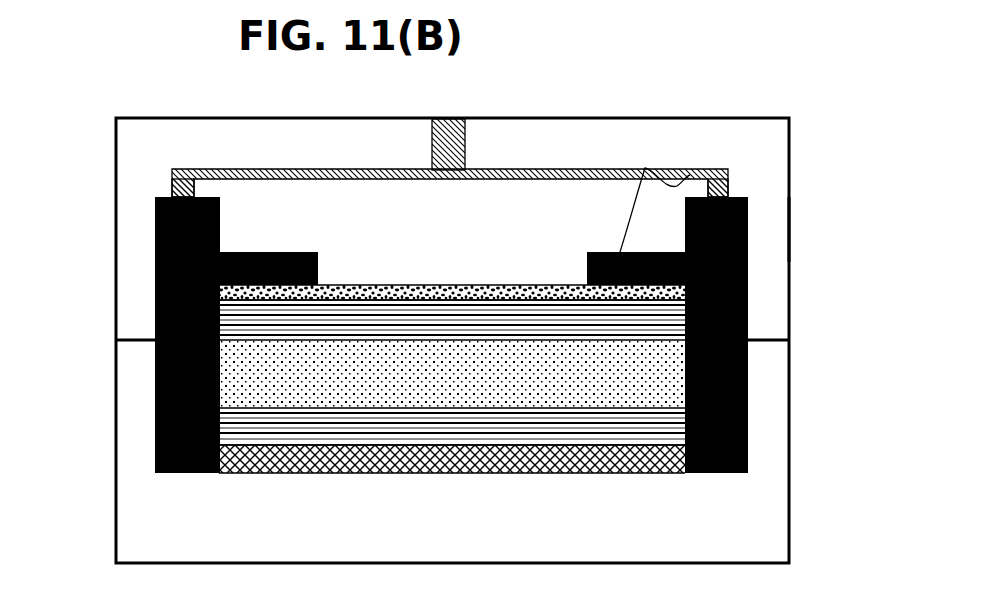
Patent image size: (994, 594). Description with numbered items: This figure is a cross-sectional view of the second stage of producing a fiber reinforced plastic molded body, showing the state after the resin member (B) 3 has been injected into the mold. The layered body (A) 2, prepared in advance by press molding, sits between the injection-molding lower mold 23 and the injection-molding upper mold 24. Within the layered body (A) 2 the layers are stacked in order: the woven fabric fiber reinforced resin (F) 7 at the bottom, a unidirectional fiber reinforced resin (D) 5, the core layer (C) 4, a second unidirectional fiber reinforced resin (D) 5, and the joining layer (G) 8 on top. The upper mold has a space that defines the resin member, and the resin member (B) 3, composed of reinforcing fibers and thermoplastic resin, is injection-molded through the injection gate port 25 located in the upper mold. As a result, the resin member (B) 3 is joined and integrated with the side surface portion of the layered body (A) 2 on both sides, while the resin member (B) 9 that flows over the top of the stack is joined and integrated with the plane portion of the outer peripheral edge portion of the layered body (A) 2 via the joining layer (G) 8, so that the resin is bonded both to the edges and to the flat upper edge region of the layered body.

The layered body (A) 2 is at (878, 270).
The resin member (B) 3 is at (748, 198).
The core layer (C) 4 is at (660, 380).
The unidirectional fiber reinforced resin (D) 5 is at (675, 327).
The woven fabric fiber reinforced resin (F) 7 is at (663, 467).
The joining layer (G) 8 is at (748, 262).
The resin member (B) 9 is at (687, 178).
The injection-molding lower mold 23 is at (133, 527).
The injection-molding upper mold 24 is at (132, 140).
The injection gate port 25 is at (173, 192).